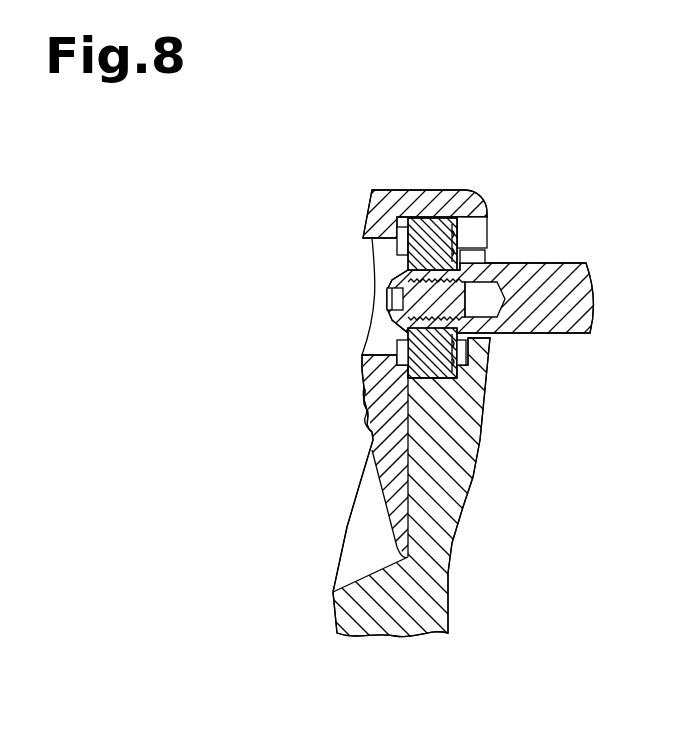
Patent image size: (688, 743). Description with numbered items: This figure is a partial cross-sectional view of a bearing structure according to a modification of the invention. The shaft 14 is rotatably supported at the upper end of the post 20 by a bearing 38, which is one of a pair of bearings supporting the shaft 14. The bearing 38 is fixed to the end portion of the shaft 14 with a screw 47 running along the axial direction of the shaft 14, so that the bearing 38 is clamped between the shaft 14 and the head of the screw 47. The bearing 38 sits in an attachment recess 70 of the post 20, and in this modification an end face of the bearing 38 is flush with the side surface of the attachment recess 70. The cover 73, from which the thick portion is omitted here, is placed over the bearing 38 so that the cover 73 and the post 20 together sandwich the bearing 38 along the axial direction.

The cover 73 is at (368, 190).
The bearing 38 is at (437, 214).
The shaft 14 is at (522, 263).
The screw 47 is at (387, 298).
The post 20 is at (482, 387).
The attachment recess 70 is at (367, 417).